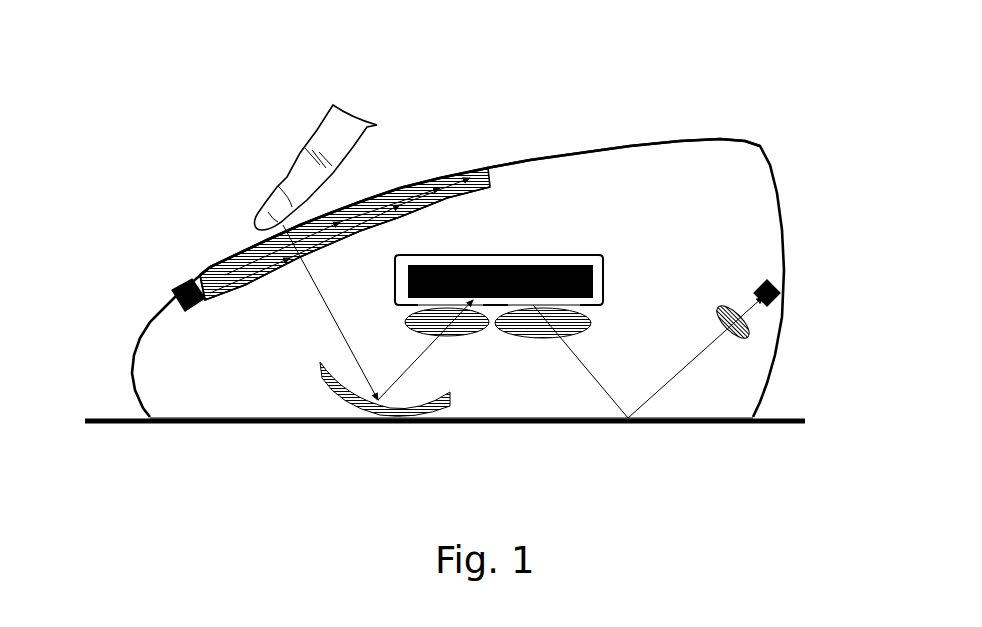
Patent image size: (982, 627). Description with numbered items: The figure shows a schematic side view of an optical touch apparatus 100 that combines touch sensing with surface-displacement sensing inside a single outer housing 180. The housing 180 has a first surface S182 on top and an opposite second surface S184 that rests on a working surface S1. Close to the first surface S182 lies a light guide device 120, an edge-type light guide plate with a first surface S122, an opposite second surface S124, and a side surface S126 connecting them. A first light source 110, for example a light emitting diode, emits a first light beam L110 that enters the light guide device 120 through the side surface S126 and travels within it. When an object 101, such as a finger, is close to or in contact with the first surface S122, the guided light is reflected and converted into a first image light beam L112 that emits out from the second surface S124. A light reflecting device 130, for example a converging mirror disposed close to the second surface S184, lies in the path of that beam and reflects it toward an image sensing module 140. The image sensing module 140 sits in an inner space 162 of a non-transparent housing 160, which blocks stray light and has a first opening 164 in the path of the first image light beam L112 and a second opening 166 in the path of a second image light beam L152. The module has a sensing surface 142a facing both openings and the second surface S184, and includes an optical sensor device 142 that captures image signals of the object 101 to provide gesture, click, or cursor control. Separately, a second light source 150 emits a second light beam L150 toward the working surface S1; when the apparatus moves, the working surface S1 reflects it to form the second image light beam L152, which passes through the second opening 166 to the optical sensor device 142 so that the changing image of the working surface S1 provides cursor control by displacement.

The optical touch apparatus 100 is at (452, 97).
The object 101 is at (297, 177).
The first light source 110 is at (173, 287).
The first light beam L110 is at (210, 290).
The light guide device 120 is at (398, 184).
The first surface S122 is at (227, 257).
The second surface S124 is at (243, 285).
The side surface S126 is at (200, 300).
The first image light beam L112 is at (338, 314).
The light reflecting device 130 is at (363, 408).
The image sensing module 140 is at (516, 285).
The optical sensor device 142 is at (528, 262).
The sensing surface 142a is at (470, 304).
The first opening 164 is at (438, 302).
The second opening 166 is at (520, 306).
The housing 160 is at (553, 254).
The inner space 162 is at (598, 288).
The housing 180 is at (703, 138).
The first surface S182 is at (657, 138).
The second surface S184 is at (190, 412).
The second light source 150 is at (783, 303).
The second light beam L150 is at (687, 373).
The second image light beam L152 is at (593, 381).
The working surface S1 is at (773, 417).